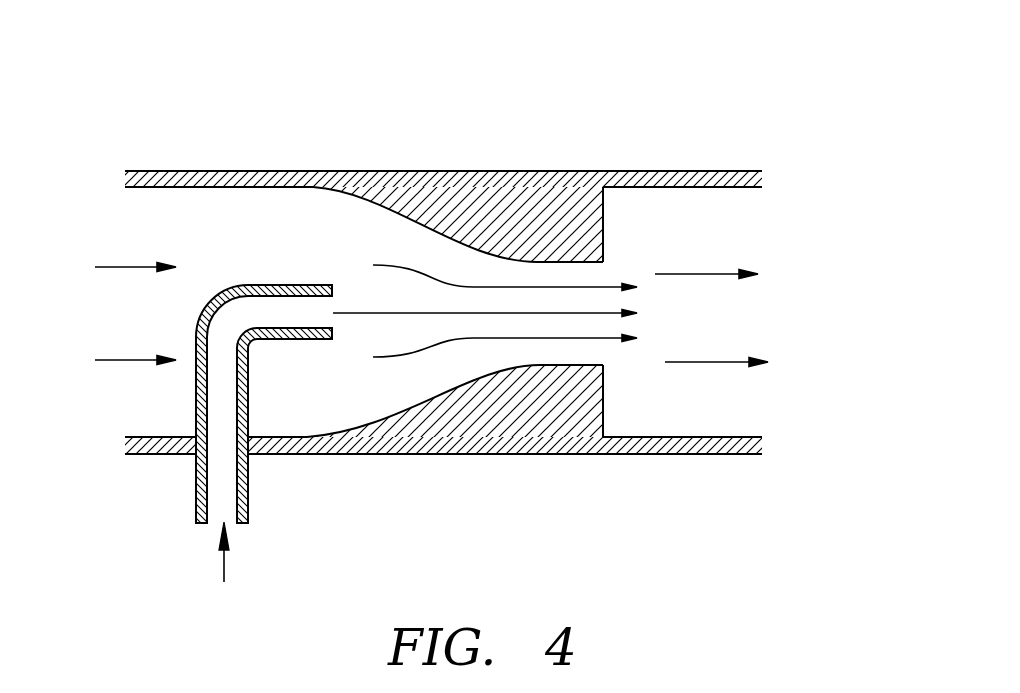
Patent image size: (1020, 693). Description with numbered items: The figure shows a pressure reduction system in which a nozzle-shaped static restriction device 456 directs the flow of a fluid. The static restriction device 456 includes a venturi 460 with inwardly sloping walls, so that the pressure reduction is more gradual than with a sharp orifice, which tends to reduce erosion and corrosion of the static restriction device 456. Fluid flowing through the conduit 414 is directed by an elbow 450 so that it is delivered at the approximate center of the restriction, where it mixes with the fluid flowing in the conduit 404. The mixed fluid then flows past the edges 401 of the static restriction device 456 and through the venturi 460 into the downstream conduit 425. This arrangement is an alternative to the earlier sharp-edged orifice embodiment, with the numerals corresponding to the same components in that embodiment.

The static restriction device 456 is at (562, 112).
The venturi 460 is at (412, 217).
The elbow 450 is at (242, 312).
The edges 401 is at (607, 262).
The conduit 404 is at (134, 314).
The conduit 425 is at (711, 318).
The conduit 414 is at (250, 557).